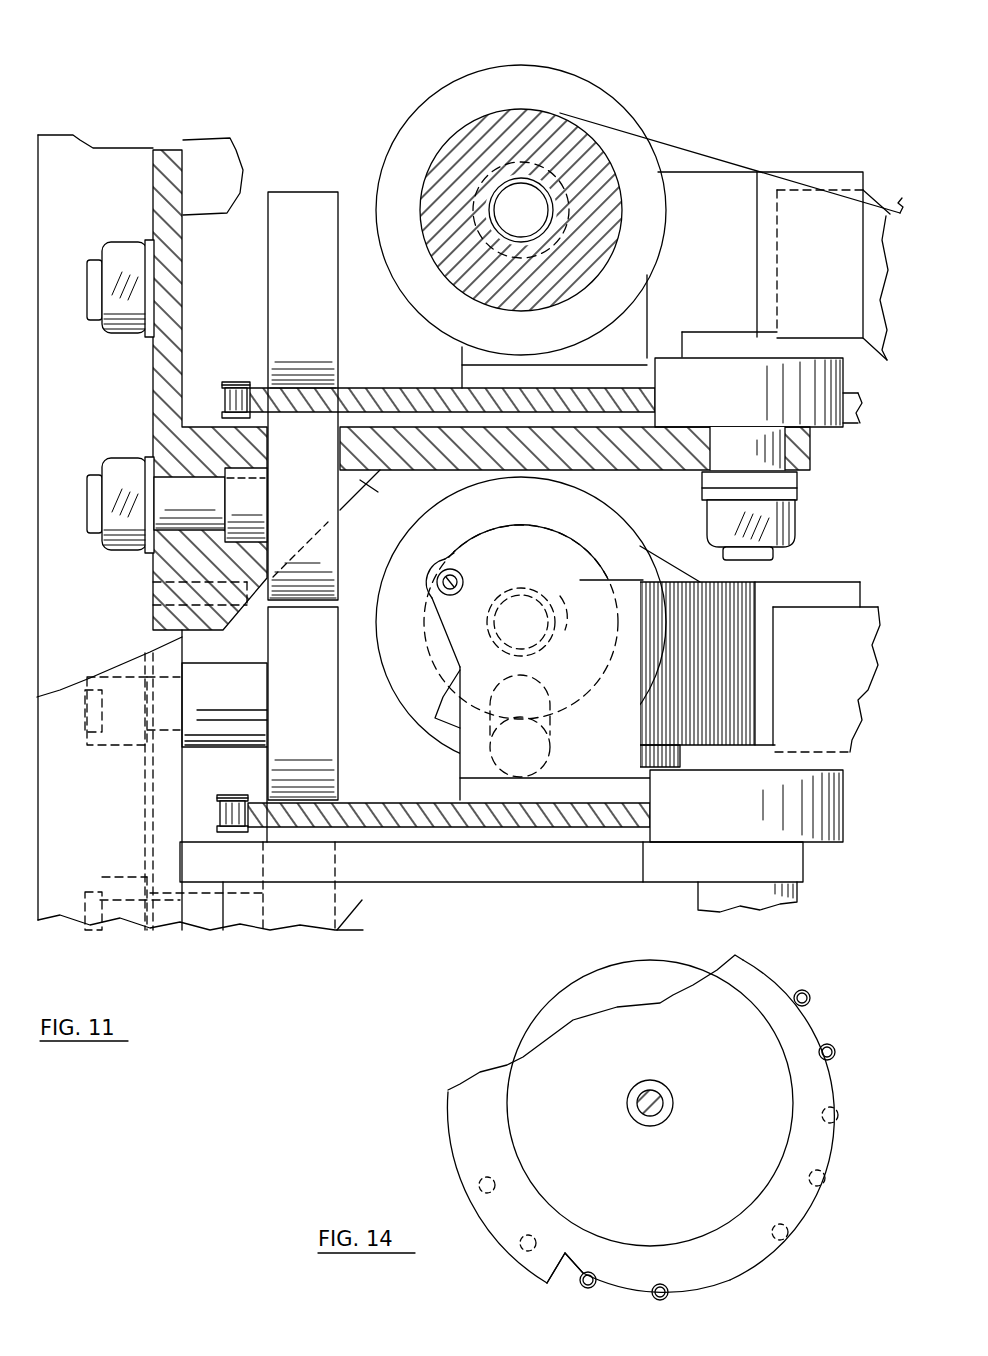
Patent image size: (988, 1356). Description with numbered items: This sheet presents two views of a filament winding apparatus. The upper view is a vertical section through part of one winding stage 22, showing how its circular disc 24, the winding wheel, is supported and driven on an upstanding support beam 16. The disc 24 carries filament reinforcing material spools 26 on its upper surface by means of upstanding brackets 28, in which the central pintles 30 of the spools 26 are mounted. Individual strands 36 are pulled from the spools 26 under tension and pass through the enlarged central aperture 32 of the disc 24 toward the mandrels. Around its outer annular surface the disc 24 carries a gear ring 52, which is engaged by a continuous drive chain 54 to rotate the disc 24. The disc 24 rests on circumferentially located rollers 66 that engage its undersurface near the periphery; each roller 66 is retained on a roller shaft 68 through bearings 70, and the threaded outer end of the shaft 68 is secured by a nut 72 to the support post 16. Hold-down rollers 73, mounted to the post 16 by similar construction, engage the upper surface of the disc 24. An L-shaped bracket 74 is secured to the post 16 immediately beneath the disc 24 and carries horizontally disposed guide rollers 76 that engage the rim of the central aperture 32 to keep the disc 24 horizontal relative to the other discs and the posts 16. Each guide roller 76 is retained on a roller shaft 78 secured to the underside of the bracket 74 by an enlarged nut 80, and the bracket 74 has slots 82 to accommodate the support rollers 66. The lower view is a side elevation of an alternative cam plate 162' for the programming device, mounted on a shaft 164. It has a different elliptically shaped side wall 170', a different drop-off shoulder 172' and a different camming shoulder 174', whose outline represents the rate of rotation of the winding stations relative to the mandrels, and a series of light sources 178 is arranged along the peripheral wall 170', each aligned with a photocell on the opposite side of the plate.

In FIG. 11, the upstanding support beam 16 is at (62, 140).
In FIG. 11, the winding stage 22 is at (620, 372).
In FIG. 11, the circular disc 24 is at (388, 388).
In FIG. 11, the filament reinforcing material spool 26 is at (610, 70).
In FIG. 11, the upstanding bracket 28 is at (683, 210).
In FIG. 11, the central pintle 30 is at (548, 227).
In FIG. 11, the central aperture 32 is at (655, 400).
In FIG. 11, the strand 36 is at (712, 157).
In FIG. 11, the gear ring 52 is at (246, 382).
In FIG. 11, the drive chain 54 is at (237, 382).
In FIG. 11, the roller 66 is at (323, 558).
In FIG. 11, the roller shaft 68 is at (183, 485).
In FIG. 11, the bearing 70 is at (252, 502).
In FIG. 11, the nut 72 is at (105, 548).
In FIG. 11, the hold-down roller 73 is at (302, 202).
In FIG. 11, the L-shaped bracket 74 is at (805, 452).
In FIG. 11, the guide roller 76 is at (845, 420).
In FIG. 11, the roller shaft 78 is at (797, 485).
In FIG. 11, the enlarged nut 80 is at (780, 520).
In FIG. 11, the slot 82 is at (372, 490).
In FIG. 14, the alternative cam plate 162' is at (647, 1094).
In FIG. 14, the shaft 164 is at (667, 1098).
In FIG. 14, the elliptically shaped side wall 170' is at (667, 1126).
In FIG. 14, the drop-off shoulder 172' is at (548, 1289).
In FIG. 14, the camming shoulder 174' is at (606, 1293).
In FIG. 14, the light source 178 is at (590, 1273).